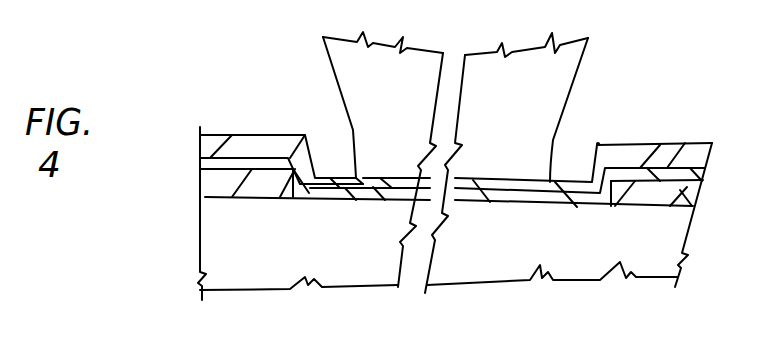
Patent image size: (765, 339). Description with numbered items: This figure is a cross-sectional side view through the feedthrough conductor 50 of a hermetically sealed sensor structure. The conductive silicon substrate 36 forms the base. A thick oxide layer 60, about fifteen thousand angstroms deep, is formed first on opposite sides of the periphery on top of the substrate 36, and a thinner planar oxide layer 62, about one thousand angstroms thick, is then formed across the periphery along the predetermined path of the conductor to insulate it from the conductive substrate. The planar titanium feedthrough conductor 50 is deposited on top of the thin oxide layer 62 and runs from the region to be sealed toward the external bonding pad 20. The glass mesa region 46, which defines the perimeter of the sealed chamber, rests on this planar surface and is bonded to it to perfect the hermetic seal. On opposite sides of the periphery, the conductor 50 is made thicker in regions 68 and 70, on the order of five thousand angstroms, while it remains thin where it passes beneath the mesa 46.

The external bonding pad 20 is at (698, 143).
The semiconductor substrate 36 is at (260, 270).
The mesa region 46 is at (370, 100).
The feedthrough conductor 50 is at (212, 160).
The thick oxide layer 60 is at (216, 184).
The thin planar oxide layer 62 is at (350, 196).
The thicker region of feedthrough conductor 68 is at (642, 153).
The thicker region of feedthrough conductor 70 is at (246, 133).